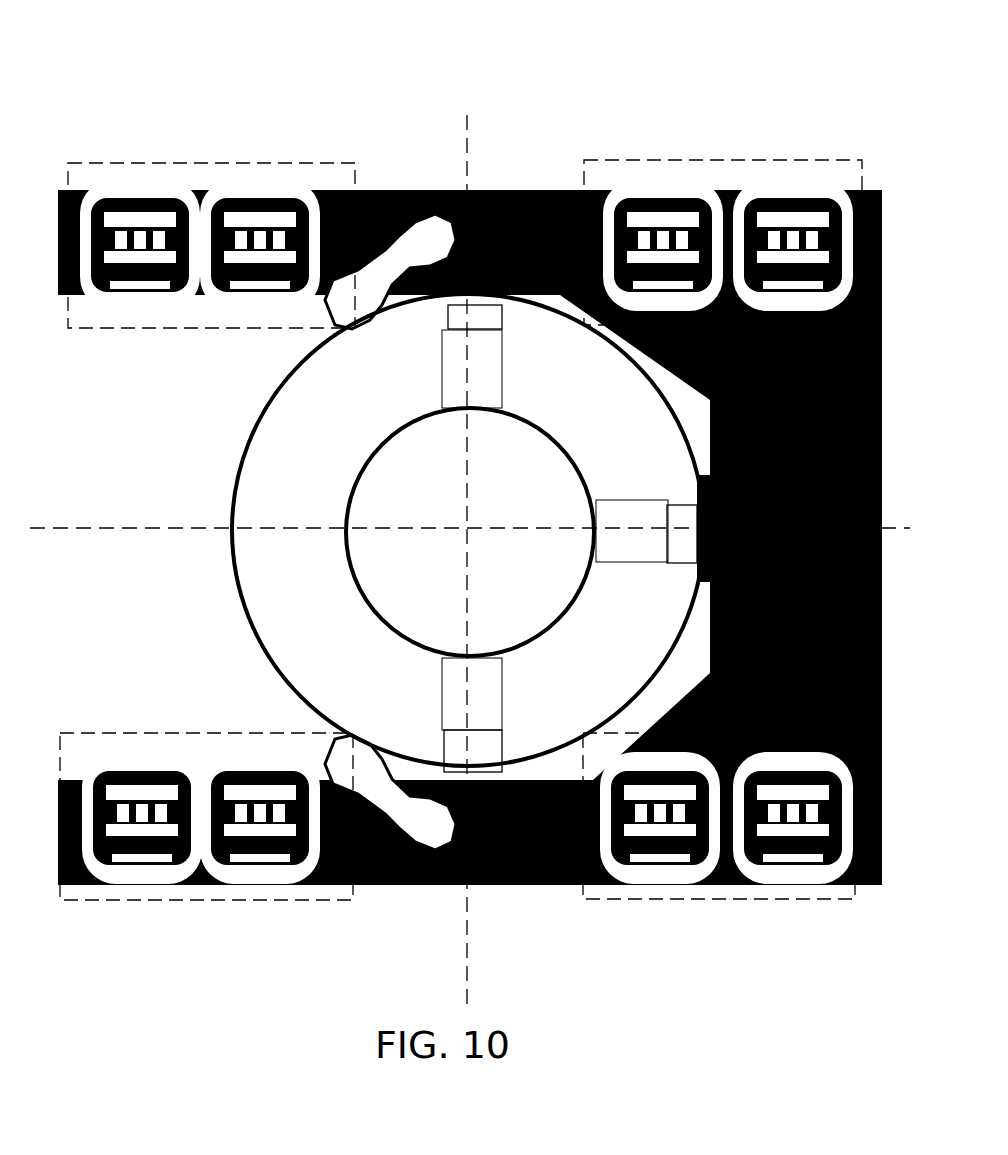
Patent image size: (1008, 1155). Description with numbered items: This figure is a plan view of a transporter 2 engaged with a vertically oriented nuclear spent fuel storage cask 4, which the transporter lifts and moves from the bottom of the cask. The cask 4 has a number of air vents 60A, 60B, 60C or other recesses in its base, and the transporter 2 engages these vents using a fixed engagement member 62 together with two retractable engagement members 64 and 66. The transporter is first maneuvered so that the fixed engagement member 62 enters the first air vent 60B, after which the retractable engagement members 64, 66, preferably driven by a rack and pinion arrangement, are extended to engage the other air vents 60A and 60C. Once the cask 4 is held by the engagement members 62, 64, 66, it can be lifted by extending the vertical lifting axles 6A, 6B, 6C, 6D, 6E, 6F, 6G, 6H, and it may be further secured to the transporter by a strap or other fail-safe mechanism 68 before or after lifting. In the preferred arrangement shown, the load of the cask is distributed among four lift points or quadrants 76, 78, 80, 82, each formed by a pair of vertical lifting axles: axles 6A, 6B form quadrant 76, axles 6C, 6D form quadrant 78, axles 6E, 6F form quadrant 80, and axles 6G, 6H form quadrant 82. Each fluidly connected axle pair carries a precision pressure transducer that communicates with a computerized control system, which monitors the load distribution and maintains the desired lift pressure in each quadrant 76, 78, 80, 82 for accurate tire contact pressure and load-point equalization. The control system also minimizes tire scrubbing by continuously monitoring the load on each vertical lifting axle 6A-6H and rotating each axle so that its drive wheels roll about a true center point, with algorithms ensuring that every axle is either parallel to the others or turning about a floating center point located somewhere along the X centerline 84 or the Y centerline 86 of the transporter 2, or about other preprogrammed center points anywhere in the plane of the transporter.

The transporter 2 is at (470, 451).
The cask 4 is at (452, 530).
The vertical lifting axle 6A is at (140, 272).
The vertical lifting axle 6B is at (247, 272).
The vertical lifting axle 6C is at (793, 268).
The vertical lifting axle 6D is at (672, 268).
The vertical lifting axle 6E is at (132, 793).
The vertical lifting axle 6F is at (253, 793).
The vertical lifting axle 6G is at (672, 798).
The vertical lifting axle 6H is at (793, 798).
The air vent 60A is at (506, 369).
The air vent 60B is at (598, 514).
The air vent 60C is at (506, 694).
The fixed engagement member 62 is at (728, 528).
The retractable engagement member 64 is at (505, 233).
The retractable engagement member 66 is at (493, 825).
The fail-safe mechanism 68 is at (428, 518).
The lift point or quadrant 76 is at (211, 222).
The lift point or quadrant 78 is at (723, 218).
The lift point or quadrant 80 is at (206, 838).
The lift point or quadrant 82 is at (719, 838).
The X centerline 84 is at (470, 541).
The Y centerline 86 is at (433, 566).